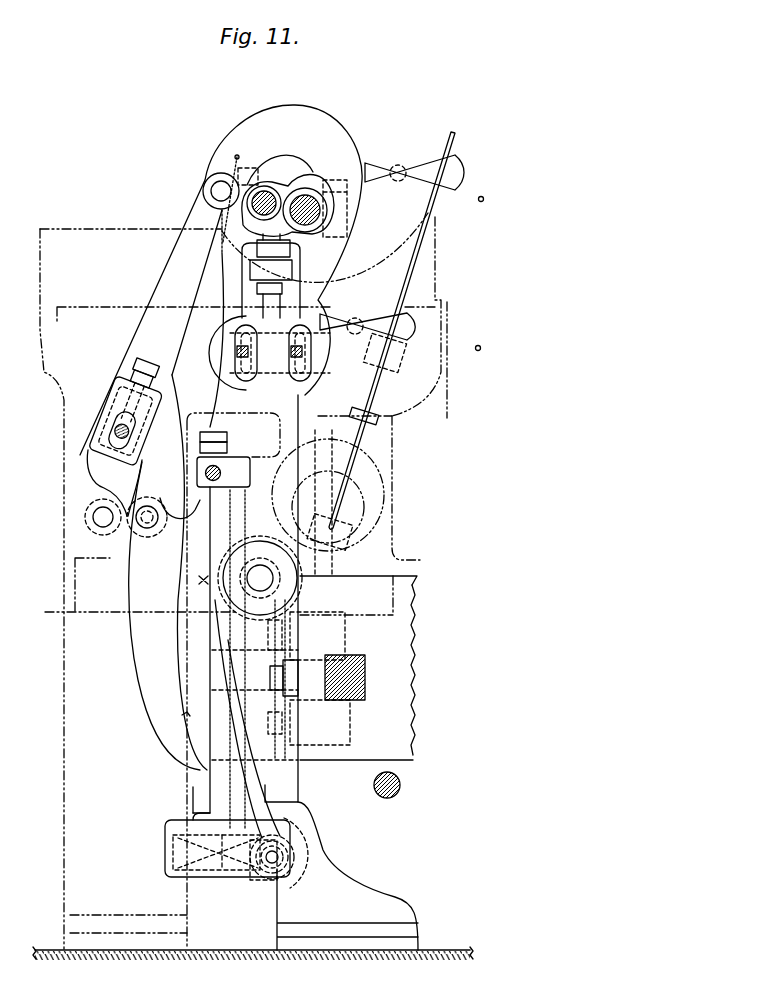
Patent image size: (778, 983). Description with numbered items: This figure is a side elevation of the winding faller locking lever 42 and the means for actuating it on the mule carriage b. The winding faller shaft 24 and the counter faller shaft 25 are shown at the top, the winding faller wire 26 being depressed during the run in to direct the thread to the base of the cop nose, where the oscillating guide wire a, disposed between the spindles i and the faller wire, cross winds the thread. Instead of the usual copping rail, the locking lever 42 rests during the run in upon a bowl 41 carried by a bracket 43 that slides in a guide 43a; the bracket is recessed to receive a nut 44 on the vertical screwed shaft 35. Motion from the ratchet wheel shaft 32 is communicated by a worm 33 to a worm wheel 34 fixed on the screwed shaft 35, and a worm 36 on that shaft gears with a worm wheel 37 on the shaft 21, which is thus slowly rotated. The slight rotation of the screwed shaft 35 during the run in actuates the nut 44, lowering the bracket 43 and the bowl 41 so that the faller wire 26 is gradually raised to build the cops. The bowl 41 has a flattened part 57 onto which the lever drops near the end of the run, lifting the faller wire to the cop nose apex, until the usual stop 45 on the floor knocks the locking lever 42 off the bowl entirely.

The shaft 21 is at (278, 583).
The winding faller shaft 24 is at (320, 213).
The counter faller shaft 25 is at (268, 178).
The winding faller wire 26 is at (493, 351).
The ratchet wheel shaft 32 is at (267, 867).
The worm 33 is at (293, 876).
The worm wheel 34 is at (171, 861).
The vertical screwed shaft 35 is at (199, 785).
The worm 36 is at (200, 580).
The worm wheel 37 is at (322, 600).
The bowl 41 is at (135, 530).
The winding faller locking lever 42 is at (143, 342).
The bracket 43 is at (155, 658).
The guide 43a is at (236, 490).
The nut 44 is at (185, 718).
The stop 45 is at (325, 865).
The flattened part 57 is at (174, 516).
The guide wire a is at (448, 333).
The mule carriage b is at (403, 587).
The spindle i is at (413, 275).